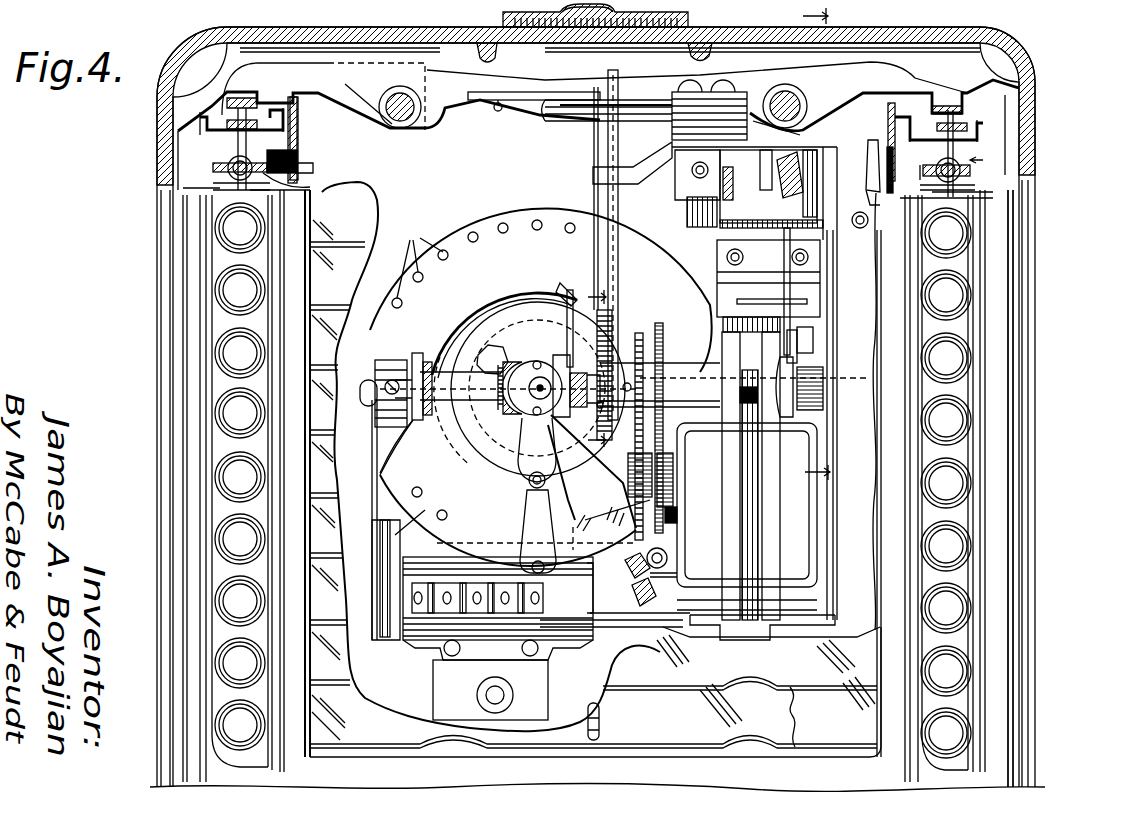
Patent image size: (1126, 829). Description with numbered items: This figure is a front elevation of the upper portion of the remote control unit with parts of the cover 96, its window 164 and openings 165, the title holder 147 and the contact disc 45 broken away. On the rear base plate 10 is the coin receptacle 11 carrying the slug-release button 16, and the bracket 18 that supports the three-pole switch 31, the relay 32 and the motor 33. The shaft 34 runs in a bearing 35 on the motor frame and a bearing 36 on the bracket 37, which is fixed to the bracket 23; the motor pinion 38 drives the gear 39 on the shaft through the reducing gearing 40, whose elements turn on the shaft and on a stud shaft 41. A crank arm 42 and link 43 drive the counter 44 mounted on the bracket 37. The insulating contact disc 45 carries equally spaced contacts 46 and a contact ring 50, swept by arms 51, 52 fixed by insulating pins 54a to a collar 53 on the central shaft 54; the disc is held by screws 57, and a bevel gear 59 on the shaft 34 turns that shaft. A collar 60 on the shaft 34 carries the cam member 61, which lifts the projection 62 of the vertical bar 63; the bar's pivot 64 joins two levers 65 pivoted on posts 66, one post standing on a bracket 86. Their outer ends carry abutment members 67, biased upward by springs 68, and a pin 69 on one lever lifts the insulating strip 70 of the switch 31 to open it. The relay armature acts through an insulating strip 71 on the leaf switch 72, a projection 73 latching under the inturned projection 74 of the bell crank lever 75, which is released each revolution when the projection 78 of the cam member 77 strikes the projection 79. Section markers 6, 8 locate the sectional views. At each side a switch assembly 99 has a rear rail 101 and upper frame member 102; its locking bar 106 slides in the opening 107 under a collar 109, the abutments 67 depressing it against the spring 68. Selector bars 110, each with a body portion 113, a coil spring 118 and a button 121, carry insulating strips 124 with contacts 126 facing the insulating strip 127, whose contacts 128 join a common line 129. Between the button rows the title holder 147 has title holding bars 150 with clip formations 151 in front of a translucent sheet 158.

The section line 6 is at (809, 244).
The section line 8 is at (590, 377).
The rear base plate 10 is at (980, 77).
The receptacle 11 is at (505, 13).
The button 16 is at (680, 10).
The bracket 18 is at (812, 198).
The bracket 23 is at (595, 685).
The three-pole switch 31 is at (670, 112).
The relay 32 is at (754, 193).
The motor 33 is at (756, 519).
The shaft 34 is at (493, 305).
The bearing 35 is at (713, 363).
The bearing 36 is at (420, 350).
The bracket 37 is at (403, 523).
The pinion 38 is at (650, 518).
The gear 39 is at (634, 333).
The train of reducing gearing 40 is at (660, 423).
The stud shaft 41 is at (566, 490).
The crank arm 42 is at (373, 450).
The link 43 is at (372, 520).
The counter 44 is at (430, 628).
The contact disc 45 is at (460, 215).
The contacts 46 is at (482, 369).
The contact ring 50 is at (527, 285).
The arm 51 is at (522, 513).
The arm 52 is at (493, 470).
The collar 53 is at (517, 460).
The shaft 54 is at (513, 415).
The pins 54a is at (587, 524).
The screws 57 is at (525, 360).
The bevel gear 59 is at (566, 283).
The collar 60 is at (590, 410).
The cam member 61 is at (590, 353).
The projection 62 is at (612, 312).
The bar 63 is at (620, 210).
The pivot 64 is at (568, 125).
The levers 65 is at (455, 128).
The posts 66 is at (395, 130).
The abutment members 67 is at (235, 90).
The springs 68 is at (213, 117).
The pin 69 is at (497, 112).
The strip of insulation 70 is at (470, 92).
The strip of insulation 71 is at (768, 286).
The leaf switch 72 is at (808, 301).
The projection 73 is at (800, 235).
The inwardly turned projection 74 is at (767, 255).
The bell crank lever 75 is at (820, 270).
The cam member 77 is at (825, 378).
The projection 78 is at (825, 400).
The projection 79 is at (815, 352).
The bracket 86 is at (376, 96).
The removable cover 96 is at (1020, 412).
The switch assembly 99 is at (228, 178).
The rear rail 101 is at (206, 187).
The upper frame member 102 is at (205, 170).
The locking bar 106 is at (217, 213).
The opening 107 is at (215, 176).
The collar 109 is at (262, 100).
The selector bars 110 is at (207, 200).
The body portion 113 is at (592, 139).
The coil spring 118 is at (614, 456).
The button 121 is at (227, 352).
The strip of insulation 124 is at (578, 162).
The contact member 126 is at (300, 160).
The strip of insulation 127 is at (308, 95).
The contacts 128 is at (300, 190).
The common line 129 is at (315, 170).
The title holder 147 is at (858, 660).
The title holding bars 150 is at (335, 300).
The clip formations 151 is at (602, 716).
The sheet of translucent material 158 is at (320, 700).
The window 164 is at (307, 327).
The openings 165 is at (230, 414).